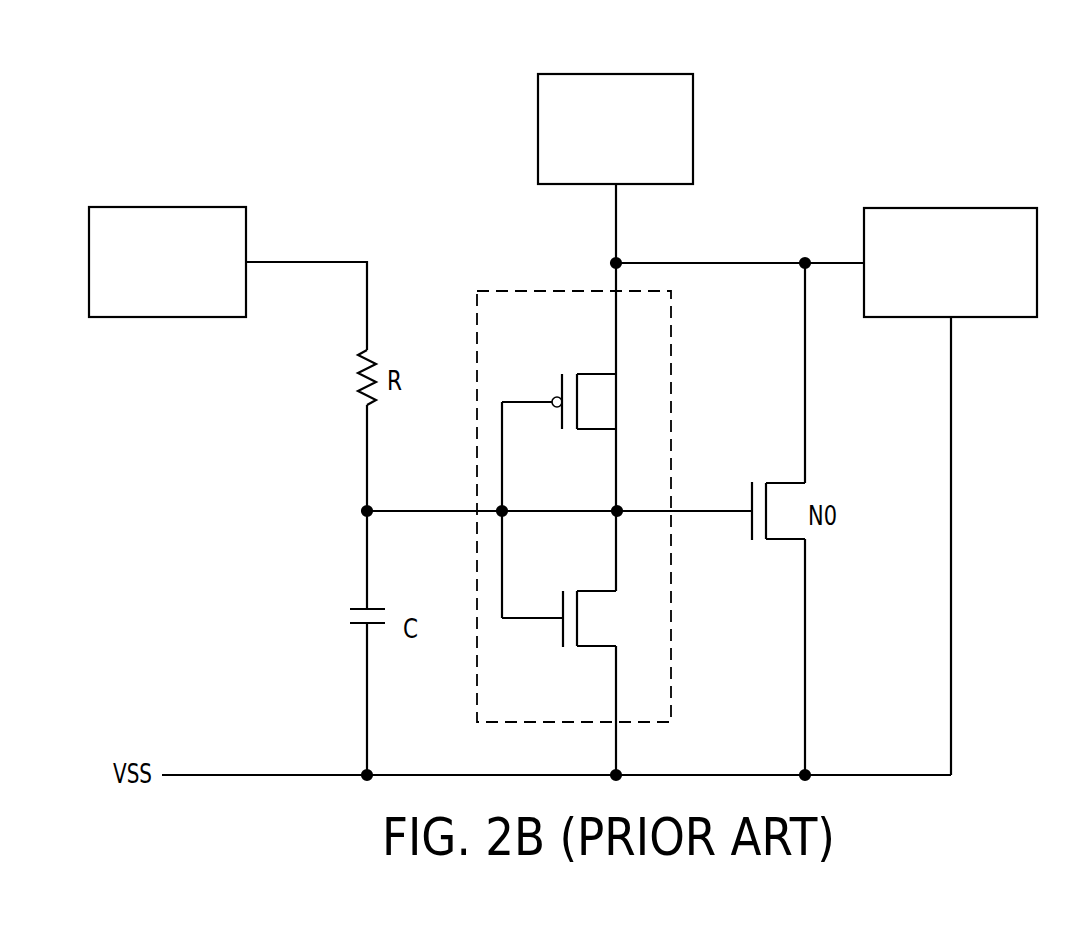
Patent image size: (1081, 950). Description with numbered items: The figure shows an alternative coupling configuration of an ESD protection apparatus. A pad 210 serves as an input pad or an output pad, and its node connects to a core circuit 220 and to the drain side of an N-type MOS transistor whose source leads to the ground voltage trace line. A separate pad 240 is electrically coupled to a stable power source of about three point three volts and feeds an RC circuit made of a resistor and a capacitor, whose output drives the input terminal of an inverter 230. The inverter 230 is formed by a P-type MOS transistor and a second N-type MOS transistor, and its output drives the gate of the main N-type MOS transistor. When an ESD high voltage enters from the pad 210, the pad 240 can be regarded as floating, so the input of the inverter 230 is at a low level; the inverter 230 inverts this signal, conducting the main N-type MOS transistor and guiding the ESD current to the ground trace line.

The pad 210 is at (617, 74).
The core circuit 220 is at (950, 208).
The inverter 230 is at (673, 693).
The pad 240 is at (138, 207).